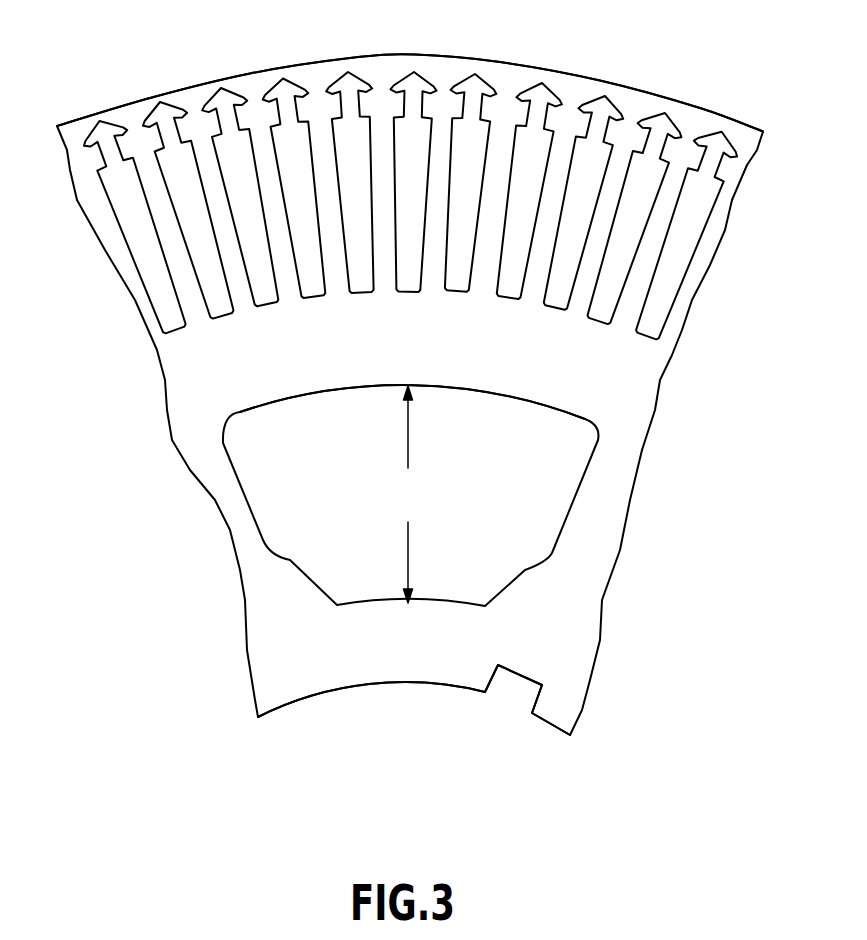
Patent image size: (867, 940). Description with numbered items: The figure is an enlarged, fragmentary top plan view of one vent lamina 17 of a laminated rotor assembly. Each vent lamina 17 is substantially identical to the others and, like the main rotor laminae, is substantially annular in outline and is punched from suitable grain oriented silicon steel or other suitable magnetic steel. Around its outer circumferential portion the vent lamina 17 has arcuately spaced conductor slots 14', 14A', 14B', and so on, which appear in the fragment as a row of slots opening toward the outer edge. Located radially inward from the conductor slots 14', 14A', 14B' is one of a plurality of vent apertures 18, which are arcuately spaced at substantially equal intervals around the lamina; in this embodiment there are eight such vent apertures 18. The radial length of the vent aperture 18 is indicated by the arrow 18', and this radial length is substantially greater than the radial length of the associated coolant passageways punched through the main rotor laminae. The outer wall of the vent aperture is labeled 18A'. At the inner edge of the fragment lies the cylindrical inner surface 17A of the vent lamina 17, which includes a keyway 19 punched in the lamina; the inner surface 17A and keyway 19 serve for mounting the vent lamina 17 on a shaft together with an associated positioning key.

The conductor slot 14' is at (294, 151).
The conductor slot 14A' is at (352, 148).
The conductor slot 14B' is at (422, 148).
The vent lamina 17 is at (517, 60).
The cylindrical inner surface 17A is at (348, 687).
The vent aperture 18 is at (411, 481).
The outer wall of opening 18A' is at (412, 381).
The arrow 18' is at (406, 494).
The keyway 19 is at (518, 684).